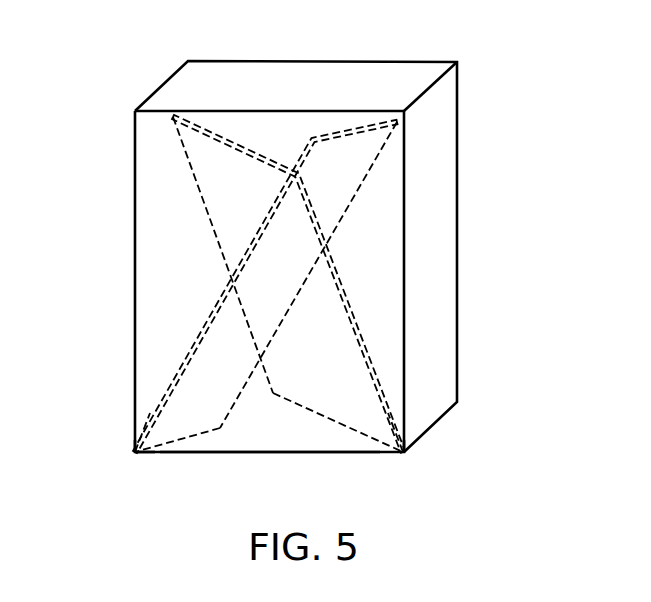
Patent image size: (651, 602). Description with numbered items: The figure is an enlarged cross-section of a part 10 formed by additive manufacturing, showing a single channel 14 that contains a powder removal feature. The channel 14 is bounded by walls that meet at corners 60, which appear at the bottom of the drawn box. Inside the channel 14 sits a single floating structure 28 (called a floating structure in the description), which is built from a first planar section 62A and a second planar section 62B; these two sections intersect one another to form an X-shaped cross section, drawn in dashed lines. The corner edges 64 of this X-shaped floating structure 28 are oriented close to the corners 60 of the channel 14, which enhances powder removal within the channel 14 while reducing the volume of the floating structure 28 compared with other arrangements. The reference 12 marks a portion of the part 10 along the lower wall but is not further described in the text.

The part 10 is at (413, 49).
The front panel 12 is at (290, 455).
The channel 14 is at (252, 455).
The floating structure 28 is at (362, 420).
The corners 60 is at (133, 452).
The first planar section 62A is at (340, 165).
The second planar section 62B is at (193, 150).
The corner edges 64 is at (157, 433).